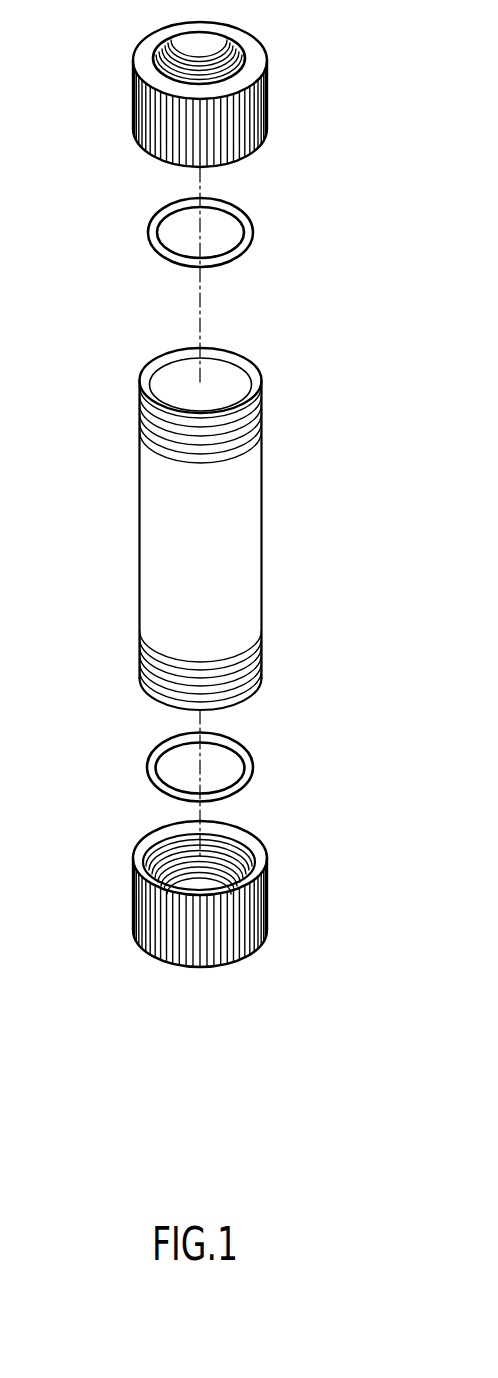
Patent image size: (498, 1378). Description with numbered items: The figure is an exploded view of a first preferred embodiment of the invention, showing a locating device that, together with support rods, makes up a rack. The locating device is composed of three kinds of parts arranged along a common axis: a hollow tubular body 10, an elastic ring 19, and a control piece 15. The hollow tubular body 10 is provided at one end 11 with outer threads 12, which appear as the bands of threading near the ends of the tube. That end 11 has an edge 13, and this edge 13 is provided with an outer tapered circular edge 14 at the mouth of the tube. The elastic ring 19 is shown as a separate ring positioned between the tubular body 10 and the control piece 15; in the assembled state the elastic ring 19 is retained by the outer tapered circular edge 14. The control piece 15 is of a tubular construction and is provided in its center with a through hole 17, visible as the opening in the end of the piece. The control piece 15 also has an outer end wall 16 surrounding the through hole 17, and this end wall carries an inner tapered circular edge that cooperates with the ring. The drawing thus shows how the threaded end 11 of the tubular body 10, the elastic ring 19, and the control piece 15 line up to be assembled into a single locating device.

The hollow tubular body 10 is at (263, 527).
The end 11 is at (272, 348).
The outer threads 12 is at (262, 413).
The edge 13 is at (140, 387).
The outer tapered circular edge 14 is at (150, 367).
The control piece 15 is at (268, 97).
The outer end wall 16 is at (245, 42).
The through hole 17 is at (173, 53).
The elastic ring 19 is at (152, 217).